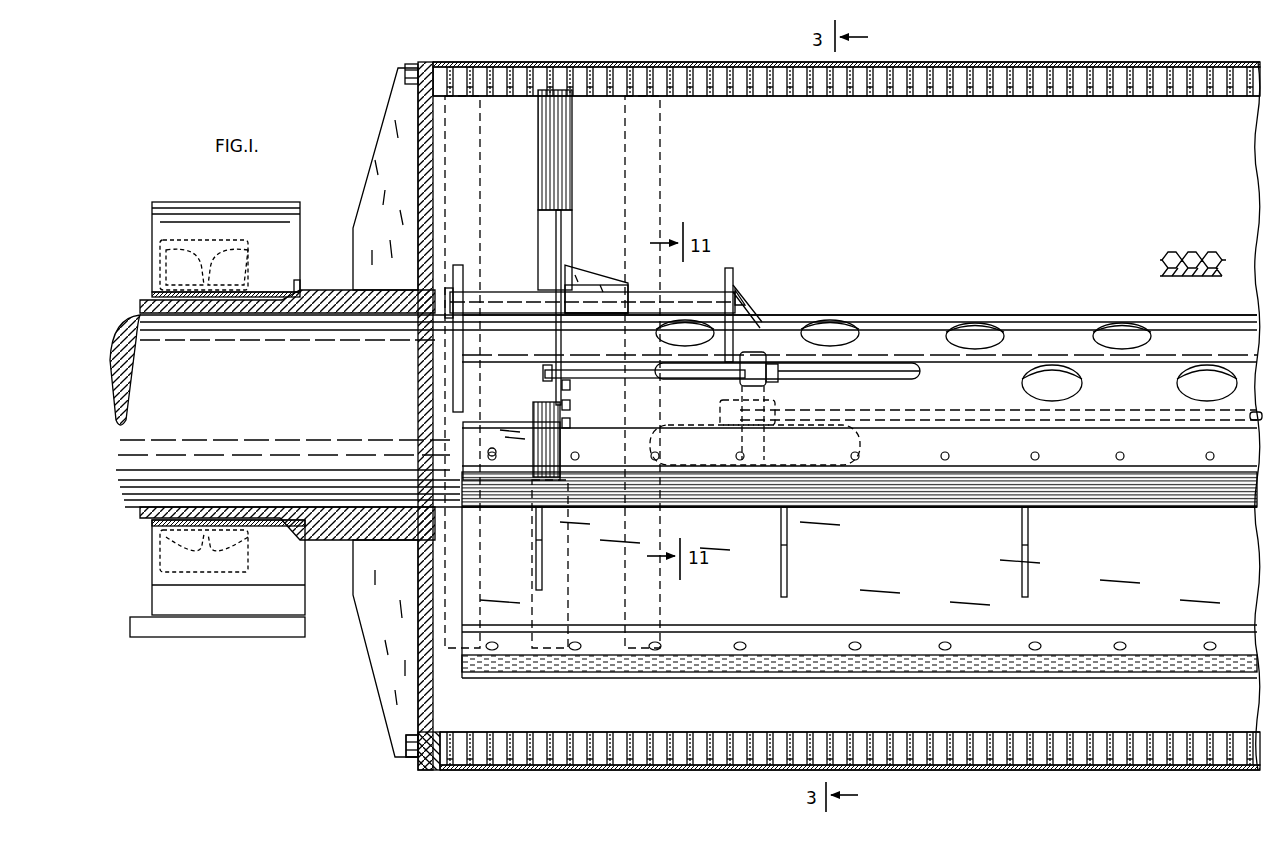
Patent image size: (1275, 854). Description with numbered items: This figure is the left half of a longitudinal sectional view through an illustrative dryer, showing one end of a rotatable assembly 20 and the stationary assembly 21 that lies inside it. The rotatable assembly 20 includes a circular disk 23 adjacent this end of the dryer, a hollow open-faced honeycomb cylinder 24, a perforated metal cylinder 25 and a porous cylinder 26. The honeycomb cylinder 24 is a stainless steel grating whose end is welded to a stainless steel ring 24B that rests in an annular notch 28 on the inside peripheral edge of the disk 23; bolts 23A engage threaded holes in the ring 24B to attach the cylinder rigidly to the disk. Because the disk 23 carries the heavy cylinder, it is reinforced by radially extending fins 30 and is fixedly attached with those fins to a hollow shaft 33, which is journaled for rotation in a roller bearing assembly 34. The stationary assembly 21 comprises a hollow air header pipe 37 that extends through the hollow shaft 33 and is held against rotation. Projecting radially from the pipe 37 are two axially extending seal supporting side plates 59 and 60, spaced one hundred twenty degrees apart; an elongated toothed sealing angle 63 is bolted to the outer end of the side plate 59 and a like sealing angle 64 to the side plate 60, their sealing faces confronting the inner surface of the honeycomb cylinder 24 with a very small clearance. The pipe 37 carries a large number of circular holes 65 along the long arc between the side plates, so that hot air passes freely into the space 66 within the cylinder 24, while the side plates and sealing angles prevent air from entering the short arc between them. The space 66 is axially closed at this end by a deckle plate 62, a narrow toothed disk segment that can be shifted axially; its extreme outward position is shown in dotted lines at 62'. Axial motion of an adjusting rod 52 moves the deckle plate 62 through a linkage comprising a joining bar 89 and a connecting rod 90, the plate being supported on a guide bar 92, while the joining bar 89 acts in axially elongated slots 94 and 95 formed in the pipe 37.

The rotatable assembly 20 is at (809, 411).
The stationary assembly 21 is at (940, 318).
The disk 23 is at (433, 700).
The bolts 23A is at (410, 75).
The honeycomb cylinder 24 is at (846, 399).
The stainless steel ring 24B is at (432, 771).
The perforated metal cylinder 25 is at (1002, 68).
The porous cylinder 26 is at (938, 62).
The annular notch 28 is at (406, 745).
The reinforcing fins 30 is at (378, 172).
The hollow shaft 33 is at (328, 296).
The roller bearing assembly 34 is at (185, 204).
The air header pipe 37 is at (880, 322).
The adjusting rod 52 is at (1254, 422).
The side plate 59 is at (470, 432).
The side plate 60 is at (859, 608).
The deckle plate 62 is at (580, 369).
The extreme outward position of deckle plate 62' is at (480, 372).
The sealing angle 63 is at (905, 509).
The sealing angle 64 is at (896, 674).
The circular holes 65 is at (830, 327).
The space 66 is at (958, 203).
The joining bar 89 is at (758, 356).
The connecting rod 90 is at (608, 379).
The guide bar 92 is at (646, 300).
The axially elongated slot 94 is at (852, 381).
The axially elongated slot 95 is at (860, 441).